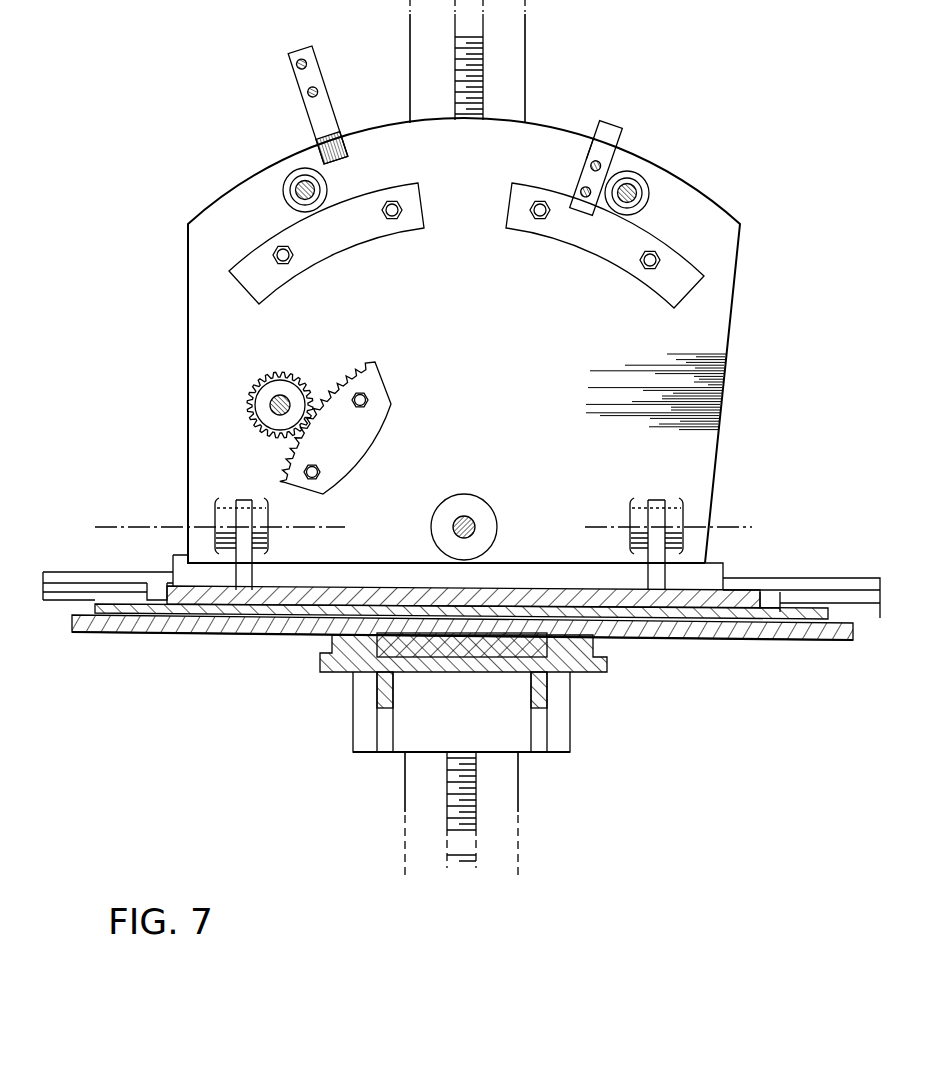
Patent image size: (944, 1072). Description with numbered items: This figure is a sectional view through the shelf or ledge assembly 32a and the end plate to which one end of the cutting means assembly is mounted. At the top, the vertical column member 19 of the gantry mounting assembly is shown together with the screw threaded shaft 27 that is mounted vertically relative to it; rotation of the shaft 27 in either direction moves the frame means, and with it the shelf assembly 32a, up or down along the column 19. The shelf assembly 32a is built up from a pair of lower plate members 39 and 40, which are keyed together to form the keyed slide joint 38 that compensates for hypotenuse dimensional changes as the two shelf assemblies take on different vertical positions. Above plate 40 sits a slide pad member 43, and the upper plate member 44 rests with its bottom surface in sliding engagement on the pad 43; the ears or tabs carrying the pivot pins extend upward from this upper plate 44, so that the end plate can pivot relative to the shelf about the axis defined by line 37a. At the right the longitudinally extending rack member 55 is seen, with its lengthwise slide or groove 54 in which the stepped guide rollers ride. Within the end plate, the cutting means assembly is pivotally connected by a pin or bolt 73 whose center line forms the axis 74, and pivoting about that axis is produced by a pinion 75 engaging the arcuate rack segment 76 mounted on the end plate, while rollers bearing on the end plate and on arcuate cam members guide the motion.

The vertical column member 19 is at (526, 40).
The screw threaded shaft 27 is at (484, 75).
The pin or bolt 73 is at (478, 510).
The pivot axis 74 is at (456, 516).
The pinion 75 is at (285, 373).
The arcuate rack segment 76 is at (350, 366).
The pivot axis line 37a is at (108, 527).
The keyed slide joint 38 is at (375, 650).
The lower plate member 39 is at (321, 672).
The lower plate member 40 is at (93, 633).
The slide pad member 43 is at (150, 614).
The upper plate member 44 is at (202, 603).
The slide or groove 54 is at (813, 591).
The rack member 55 is at (861, 578).
The shelf or ledge assembly 32a is at (641, 673).